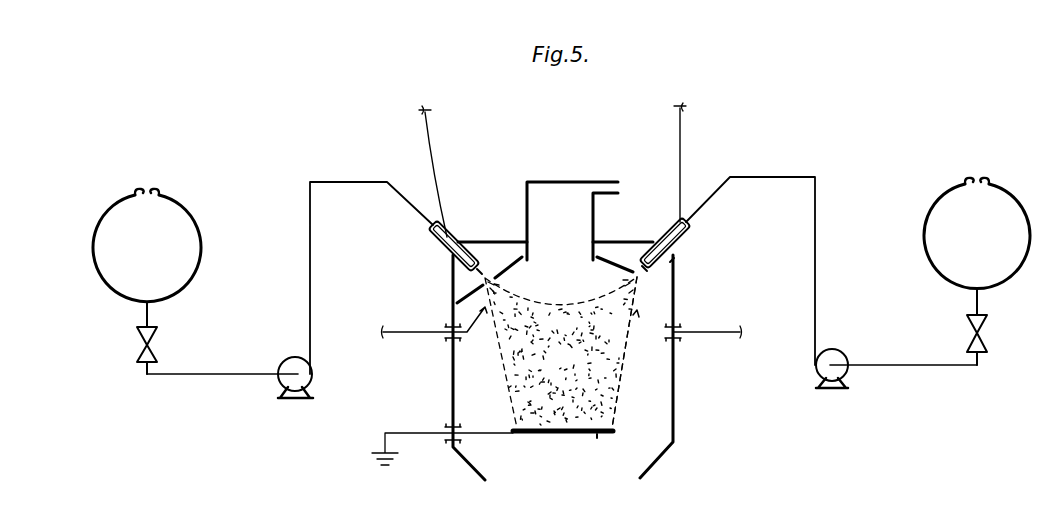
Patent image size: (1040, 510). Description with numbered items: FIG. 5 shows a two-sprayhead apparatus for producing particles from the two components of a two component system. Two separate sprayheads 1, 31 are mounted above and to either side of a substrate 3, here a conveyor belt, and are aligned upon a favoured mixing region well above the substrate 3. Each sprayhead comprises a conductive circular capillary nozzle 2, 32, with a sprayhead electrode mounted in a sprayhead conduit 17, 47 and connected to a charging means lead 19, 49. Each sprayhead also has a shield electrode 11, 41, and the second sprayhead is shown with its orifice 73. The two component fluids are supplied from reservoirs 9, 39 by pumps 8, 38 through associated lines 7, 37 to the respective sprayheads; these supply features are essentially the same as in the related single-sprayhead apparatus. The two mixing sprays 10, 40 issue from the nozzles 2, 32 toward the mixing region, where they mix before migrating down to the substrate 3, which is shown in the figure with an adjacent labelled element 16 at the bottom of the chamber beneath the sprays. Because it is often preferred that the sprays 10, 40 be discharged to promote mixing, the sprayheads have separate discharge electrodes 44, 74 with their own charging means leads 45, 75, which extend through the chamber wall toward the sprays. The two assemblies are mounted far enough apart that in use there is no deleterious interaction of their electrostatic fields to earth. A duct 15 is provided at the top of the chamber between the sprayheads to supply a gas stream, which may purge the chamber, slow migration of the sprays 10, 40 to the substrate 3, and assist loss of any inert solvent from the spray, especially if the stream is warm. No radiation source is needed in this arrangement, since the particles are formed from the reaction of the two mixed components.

The sprayhead 1 is at (476, 270).
The conductive circular capillary nozzle 2 is at (470, 280).
The substrate 3 is at (597, 436).
The line 7 is at (338, 182).
The pump 8 is at (294, 360).
The reservoir 9 is at (176, 228).
The spray 10 is at (530, 357).
The shield electrode 11 is at (512, 258).
The duct 15 is at (568, 230).
The collector plate 16 is at (566, 484).
The sprayhead conduit 17 is at (432, 243).
The charging means lead 19 is at (427, 116).
The sprayhead 31 is at (672, 262).
The conductive circular capillary nozzle 32 is at (643, 276).
The line 37 is at (778, 177).
The pump 38 is at (838, 353).
The reservoir 39 is at (947, 213).
The spray 40 is at (595, 357).
The shield electrode 41 is at (600, 254).
The discharge electrode 44 is at (485, 312).
The charging means lead 45 is at (400, 334).
The sprayhead conduit 47 is at (690, 234).
The charging means lead 49 is at (680, 118).
The orifice 73 is at (486, 268).
The discharge electrode 74 is at (637, 312).
The charging means lead 75 is at (740, 335).